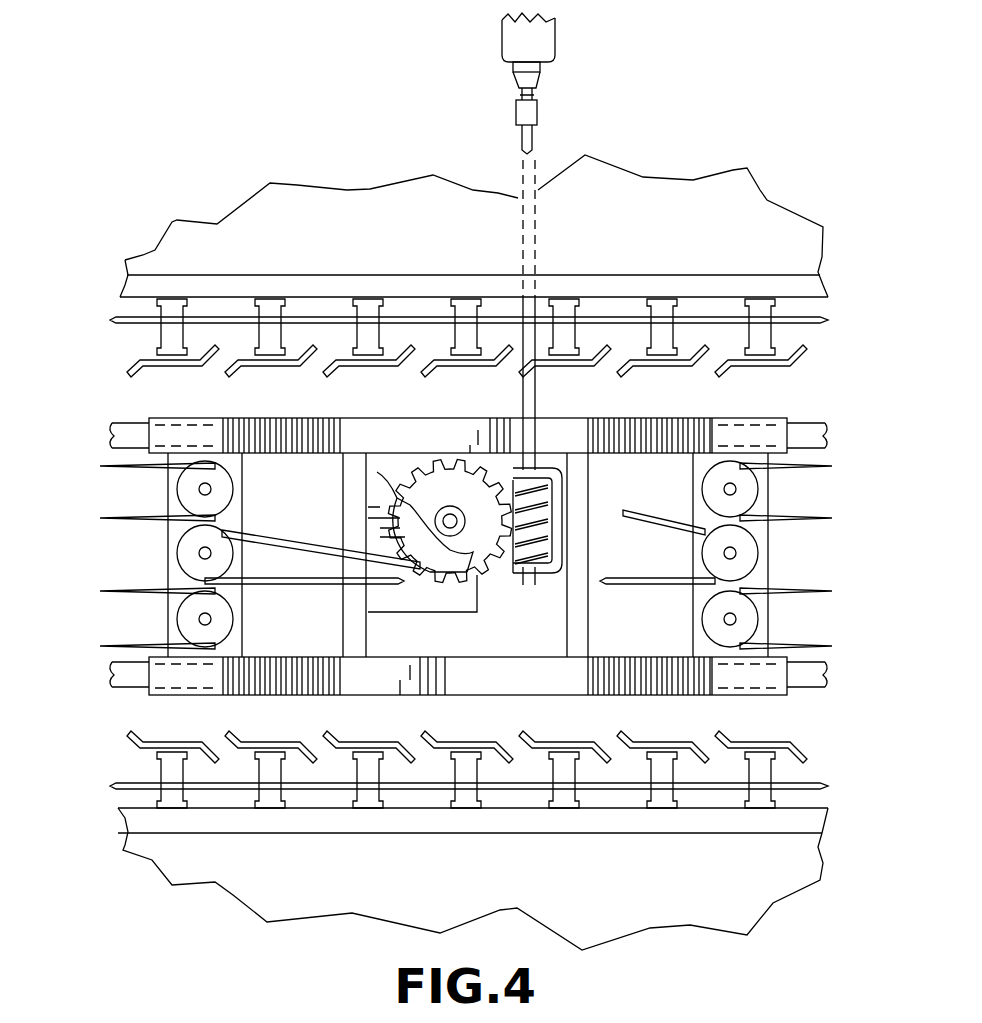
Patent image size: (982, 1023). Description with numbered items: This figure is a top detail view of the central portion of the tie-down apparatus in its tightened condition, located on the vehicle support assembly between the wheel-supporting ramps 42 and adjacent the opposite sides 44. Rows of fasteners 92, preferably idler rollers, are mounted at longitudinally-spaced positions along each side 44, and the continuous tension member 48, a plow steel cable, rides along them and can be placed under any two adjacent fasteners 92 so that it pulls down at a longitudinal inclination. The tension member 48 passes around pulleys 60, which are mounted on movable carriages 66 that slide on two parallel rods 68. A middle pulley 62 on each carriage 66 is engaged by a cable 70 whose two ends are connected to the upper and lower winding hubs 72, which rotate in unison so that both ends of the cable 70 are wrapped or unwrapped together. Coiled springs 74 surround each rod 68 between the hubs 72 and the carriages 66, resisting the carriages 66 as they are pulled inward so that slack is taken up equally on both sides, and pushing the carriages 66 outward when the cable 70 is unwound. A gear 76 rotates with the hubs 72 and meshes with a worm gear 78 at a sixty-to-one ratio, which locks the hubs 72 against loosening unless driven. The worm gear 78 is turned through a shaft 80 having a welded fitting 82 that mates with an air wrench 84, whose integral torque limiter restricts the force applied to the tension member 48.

The wheel-supporting ramp 42 is at (740, 195).
The side 44 is at (622, 275).
The tension member 48 is at (140, 325).
The pulley 60 is at (183, 619).
The middle pulley 62 is at (183, 553).
The movable carriage 66 is at (243, 618).
The rod 68 is at (805, 420).
The cable 70 is at (300, 535).
The winding hub 72 is at (433, 578).
The coiled spring 74 is at (290, 418).
The gear 76 is at (428, 465).
The worm gear 78 is at (522, 575).
The shaft 80 is at (540, 395).
The fitting 82 is at (540, 120).
The air wrench 84 is at (556, 45).
The fastener 92 is at (173, 303).